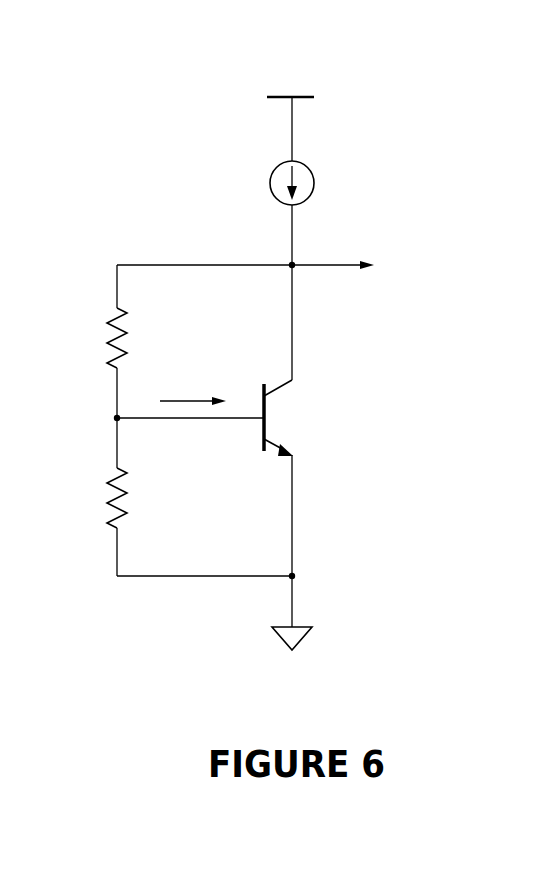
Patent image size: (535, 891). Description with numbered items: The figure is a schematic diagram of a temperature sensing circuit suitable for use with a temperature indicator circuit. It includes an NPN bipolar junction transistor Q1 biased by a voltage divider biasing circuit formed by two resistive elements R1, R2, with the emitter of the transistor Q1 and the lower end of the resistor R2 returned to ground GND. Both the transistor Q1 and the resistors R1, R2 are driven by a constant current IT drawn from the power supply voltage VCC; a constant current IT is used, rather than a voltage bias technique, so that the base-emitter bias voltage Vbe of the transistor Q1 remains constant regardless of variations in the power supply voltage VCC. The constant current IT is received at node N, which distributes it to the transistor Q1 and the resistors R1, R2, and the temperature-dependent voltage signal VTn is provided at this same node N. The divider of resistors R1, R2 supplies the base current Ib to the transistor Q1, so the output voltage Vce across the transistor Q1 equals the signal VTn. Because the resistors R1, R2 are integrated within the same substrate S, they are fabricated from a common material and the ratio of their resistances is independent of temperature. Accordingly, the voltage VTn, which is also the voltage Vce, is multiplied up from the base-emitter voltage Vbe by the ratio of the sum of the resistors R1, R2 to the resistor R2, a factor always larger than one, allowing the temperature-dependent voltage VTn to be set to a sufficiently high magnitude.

The power supply voltage VCC is at (290, 114).
The constant current IT is at (307, 213).
The node N is at (292, 265).
The temperature-dependent voltage signal VTn is at (355, 266).
The first resistive element R1 is at (94, 341).
The second resistive element R2 is at (177, 495).
The base current Ib is at (190, 394).
The NPN bipolar junction transistor Q1 is at (287, 420).
The base-emitter bias voltage Vbe is at (268, 463).
The output voltage across the transistor Vce is at (350, 372).
The substrate S is at (385, 486).
The ground GND is at (294, 628).